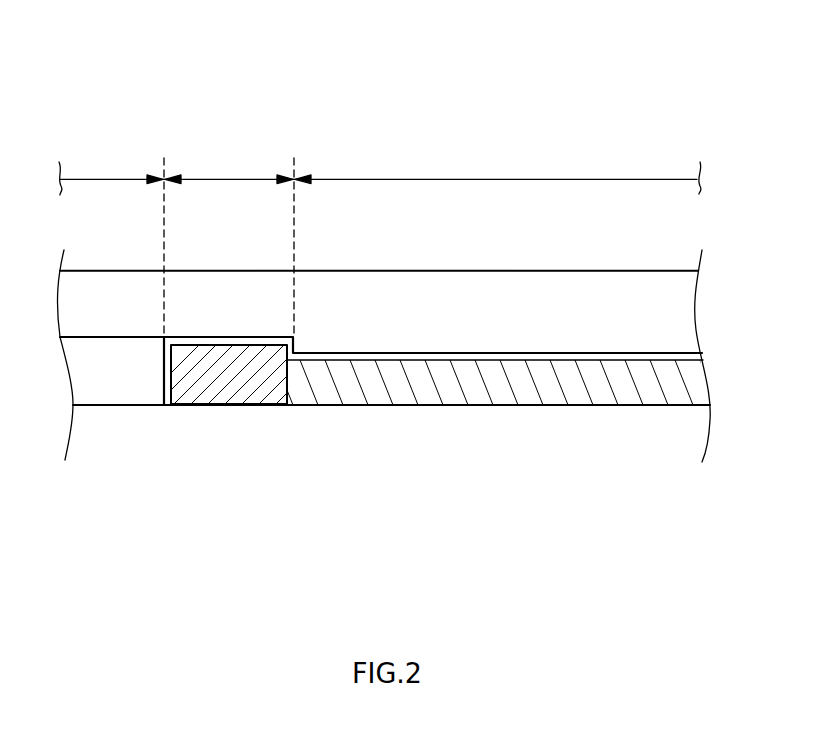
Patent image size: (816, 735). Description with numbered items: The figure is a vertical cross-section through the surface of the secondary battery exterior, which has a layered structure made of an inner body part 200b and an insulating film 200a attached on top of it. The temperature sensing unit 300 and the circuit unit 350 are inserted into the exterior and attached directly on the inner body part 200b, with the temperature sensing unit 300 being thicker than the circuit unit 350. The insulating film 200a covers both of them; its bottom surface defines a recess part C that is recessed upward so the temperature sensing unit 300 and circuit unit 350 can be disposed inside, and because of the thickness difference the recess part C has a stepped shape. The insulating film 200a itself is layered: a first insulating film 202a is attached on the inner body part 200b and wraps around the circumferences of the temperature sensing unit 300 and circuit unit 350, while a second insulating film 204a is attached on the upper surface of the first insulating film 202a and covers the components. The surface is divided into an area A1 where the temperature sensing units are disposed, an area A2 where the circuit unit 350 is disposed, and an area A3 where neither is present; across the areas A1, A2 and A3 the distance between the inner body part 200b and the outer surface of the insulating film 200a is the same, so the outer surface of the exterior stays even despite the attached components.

The insulating film 200a is at (683, 17).
The first insulating film 202a is at (123, 447).
The second insulating film 204a is at (110, 287).
The inner body part 200b is at (580, 425).
The temperature sensing unit 300 is at (233, 393).
The circuit unit 350 is at (403, 390).
The recess part C is at (225, 336).
The area on which the plurality of temperature sensing units are disposed A1 is at (233, 179).
The area on which the circuit unit is disposed A2 is at (498, 179).
The area on which the temperature sensing units and the circuit unit are not dispose A3 is at (99, 179).